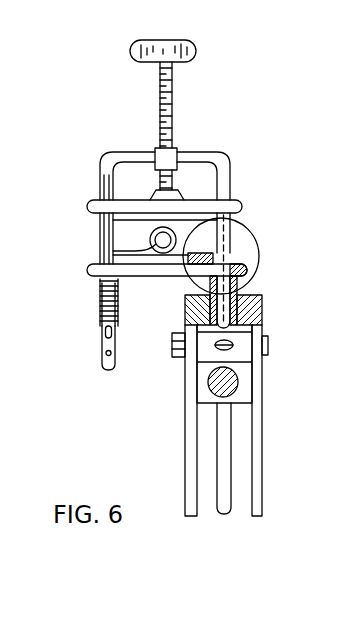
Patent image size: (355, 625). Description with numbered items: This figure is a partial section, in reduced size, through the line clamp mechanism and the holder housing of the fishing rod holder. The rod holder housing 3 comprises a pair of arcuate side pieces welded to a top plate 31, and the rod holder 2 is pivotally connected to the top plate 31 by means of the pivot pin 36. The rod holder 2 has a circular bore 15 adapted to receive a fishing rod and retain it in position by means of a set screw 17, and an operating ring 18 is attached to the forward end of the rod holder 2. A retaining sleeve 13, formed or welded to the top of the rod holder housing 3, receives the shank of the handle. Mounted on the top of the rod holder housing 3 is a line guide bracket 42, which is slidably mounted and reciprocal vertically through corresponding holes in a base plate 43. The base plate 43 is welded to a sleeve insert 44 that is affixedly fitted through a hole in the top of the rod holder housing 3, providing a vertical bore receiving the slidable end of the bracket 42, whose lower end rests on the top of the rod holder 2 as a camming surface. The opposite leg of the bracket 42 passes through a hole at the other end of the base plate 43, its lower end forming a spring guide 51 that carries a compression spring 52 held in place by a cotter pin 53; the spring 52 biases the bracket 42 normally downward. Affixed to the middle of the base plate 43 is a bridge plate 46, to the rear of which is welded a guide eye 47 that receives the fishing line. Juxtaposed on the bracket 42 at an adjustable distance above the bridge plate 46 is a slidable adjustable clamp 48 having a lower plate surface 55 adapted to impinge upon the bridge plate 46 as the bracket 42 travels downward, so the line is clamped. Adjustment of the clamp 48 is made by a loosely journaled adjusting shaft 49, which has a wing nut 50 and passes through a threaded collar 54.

The rod holder 2 is at (248, 373).
The rod holder housing 3 is at (186, 441).
The retaining sleeve 13 is at (253, 238).
The circular bore 15 is at (212, 383).
The set screw 17 is at (233, 346).
The operating ring 18 is at (232, 445).
The top plate 31 is at (263, 306).
The pivot pin 36 is at (172, 348).
The line guide bracket 42 is at (122, 152).
The base plate 43 is at (96, 282).
The sleeve insert 44 is at (240, 287).
The bridge plate 46 is at (92, 266).
The guide eye 47 is at (112, 246).
The slidable adjustable clamp 48 is at (90, 204).
The adjusting shaft 49 is at (173, 101).
The wing nut 50 is at (198, 51).
The spring guide 51 is at (100, 358).
The compression spring 52 is at (94, 305).
The cotter pin 53 is at (103, 333).
The threaded collar 54 is at (175, 152).
The lower plate surface 55 is at (110, 224).